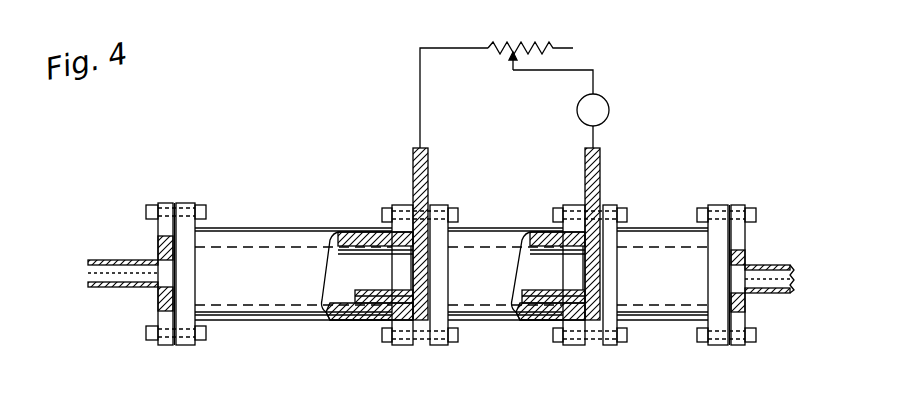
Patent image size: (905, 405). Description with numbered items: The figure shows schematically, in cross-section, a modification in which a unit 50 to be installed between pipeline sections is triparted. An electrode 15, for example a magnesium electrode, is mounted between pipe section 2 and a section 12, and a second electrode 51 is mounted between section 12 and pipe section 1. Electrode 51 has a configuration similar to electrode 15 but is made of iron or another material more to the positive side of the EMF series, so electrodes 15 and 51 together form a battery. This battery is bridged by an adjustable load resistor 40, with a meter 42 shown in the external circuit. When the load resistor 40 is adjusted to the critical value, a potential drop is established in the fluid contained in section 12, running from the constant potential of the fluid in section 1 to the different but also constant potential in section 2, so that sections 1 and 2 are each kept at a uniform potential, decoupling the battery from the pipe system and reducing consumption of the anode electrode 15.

The pipe section 1 is at (350, 323).
The pipe section 2 is at (681, 323).
The section 12 is at (545, 323).
The electrode 15 is at (590, 264).
The adjustable load resistor 40 is at (533, 45).
The ammeter 42 is at (610, 100).
The unit 50 is at (441, 200).
The second electrode 51 is at (430, 183).